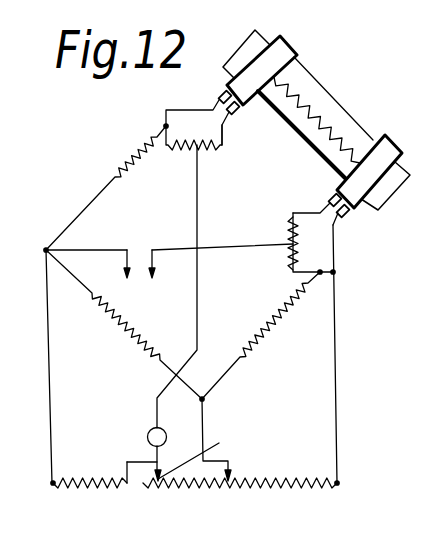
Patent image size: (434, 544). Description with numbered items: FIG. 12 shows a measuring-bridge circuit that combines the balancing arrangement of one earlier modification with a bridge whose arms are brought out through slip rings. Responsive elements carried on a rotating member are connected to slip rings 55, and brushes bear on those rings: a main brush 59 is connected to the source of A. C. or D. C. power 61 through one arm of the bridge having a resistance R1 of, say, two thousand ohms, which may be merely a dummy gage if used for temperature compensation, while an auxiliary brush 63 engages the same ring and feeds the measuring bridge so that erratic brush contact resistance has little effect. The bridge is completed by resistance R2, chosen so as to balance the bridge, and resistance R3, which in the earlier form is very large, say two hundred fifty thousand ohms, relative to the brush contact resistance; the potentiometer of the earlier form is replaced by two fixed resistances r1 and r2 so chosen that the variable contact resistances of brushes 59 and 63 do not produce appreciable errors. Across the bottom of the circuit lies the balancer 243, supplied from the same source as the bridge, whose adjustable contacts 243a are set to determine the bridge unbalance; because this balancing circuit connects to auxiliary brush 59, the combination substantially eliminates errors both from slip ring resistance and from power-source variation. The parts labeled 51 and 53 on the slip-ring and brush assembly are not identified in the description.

The first thermo-responsive contact 51 is at (220, 93).
The casing of thermo-responsive element 53 is at (285, 49).
The slip ring 55 is at (323, 118).
The brush 59 is at (345, 216).
The source of power 61 is at (139, 265).
The auxiliary brush 63 is at (236, 113).
The contacts 243a is at (230, 470).
The balancer 243 is at (262, 490).
The resistance R1 is at (106, 188).
The resistance R2 is at (124, 324).
The resistance R3 is at (272, 328).
The fixed resistance r1 is at (178, 148).
The fixed resistance r2 is at (206, 148).